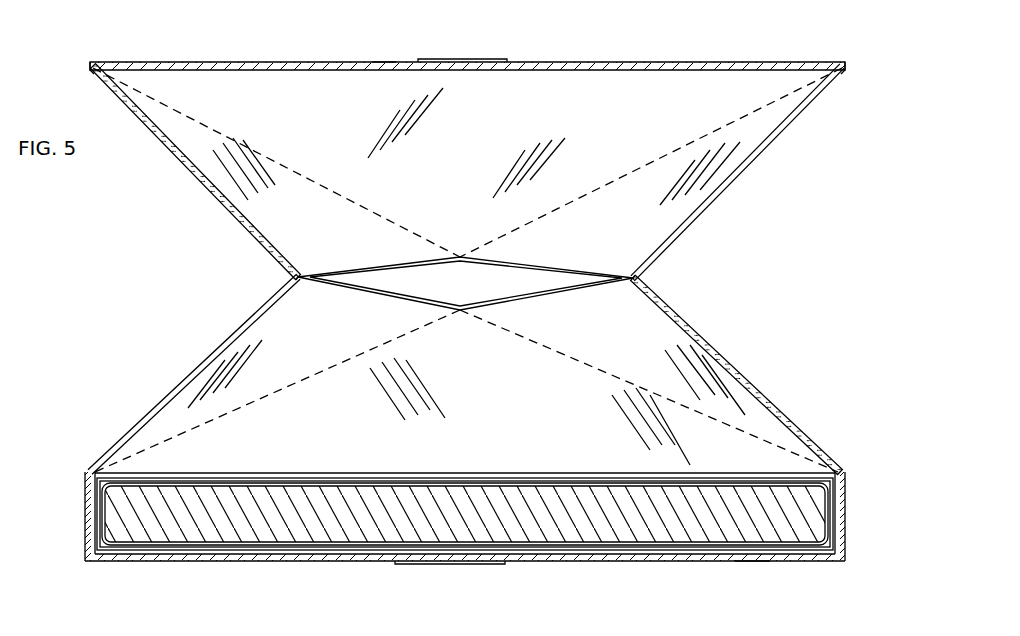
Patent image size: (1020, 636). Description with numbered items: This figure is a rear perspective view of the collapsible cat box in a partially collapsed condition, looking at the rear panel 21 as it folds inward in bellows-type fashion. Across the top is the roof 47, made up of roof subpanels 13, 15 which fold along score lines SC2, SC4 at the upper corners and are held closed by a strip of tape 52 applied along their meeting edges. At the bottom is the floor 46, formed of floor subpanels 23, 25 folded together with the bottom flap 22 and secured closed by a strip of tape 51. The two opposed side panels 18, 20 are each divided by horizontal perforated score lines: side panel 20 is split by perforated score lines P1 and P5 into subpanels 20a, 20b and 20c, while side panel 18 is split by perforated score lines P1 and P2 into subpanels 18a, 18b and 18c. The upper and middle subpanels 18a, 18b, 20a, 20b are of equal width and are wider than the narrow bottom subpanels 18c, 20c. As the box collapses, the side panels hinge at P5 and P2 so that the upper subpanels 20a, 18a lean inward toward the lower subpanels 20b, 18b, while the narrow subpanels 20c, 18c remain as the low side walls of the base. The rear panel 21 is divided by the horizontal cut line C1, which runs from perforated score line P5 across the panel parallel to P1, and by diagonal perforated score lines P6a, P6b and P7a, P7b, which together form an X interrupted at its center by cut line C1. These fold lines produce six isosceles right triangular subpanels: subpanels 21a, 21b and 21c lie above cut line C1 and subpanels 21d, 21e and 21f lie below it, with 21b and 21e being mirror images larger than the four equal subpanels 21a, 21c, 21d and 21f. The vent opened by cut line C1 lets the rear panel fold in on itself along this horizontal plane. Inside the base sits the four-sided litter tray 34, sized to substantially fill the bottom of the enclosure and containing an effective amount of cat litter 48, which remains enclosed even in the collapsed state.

The roof subpanel 13 is at (322, 61).
The roof subpanel 15 is at (655, 62).
The roof 47 is at (382, 57).
The strip of tape 52 is at (445, 61).
The score line SC2 is at (90, 62).
The score line SC4 is at (845, 62).
The side panel 20 is at (189, 269).
The subpanel 20a is at (190, 168).
The subpanel 20b is at (250, 318).
The subpanel 20c is at (85, 510).
The side panel 18 is at (738, 269).
The subpanel 18a is at (712, 205).
The subpanel 18b is at (730, 365).
The subpanel 18c is at (850, 530).
The cut line C1 is at (447, 282).
The perforated score line P5 is at (292, 276).
The perforated score line P2 is at (642, 278).
The perforated score line P1 is at (390, 473).
The perforated score line P6a is at (333, 190).
The perforated score line P7a is at (640, 168).
The perforated score line P7b is at (307, 380).
The perforated score line P6b is at (605, 374).
The rear panel 21 is at (467, 270).
The subpanel 21a is at (343, 230).
The subpanel 21b is at (490, 170).
The subpanel 21c is at (622, 230).
The subpanel 21d is at (640, 355).
The subpanel 21e is at (483, 410).
The subpanel 21f is at (336, 343).
The bottom flap 22 is at (222, 555).
The floor subpanel 23 is at (282, 558).
The tray 34 is at (162, 550).
The cat litter 48 is at (424, 529).
The floor subpanel 25 is at (658, 565).
The floor 46 is at (756, 571).
The strip of tape 51 is at (473, 563).